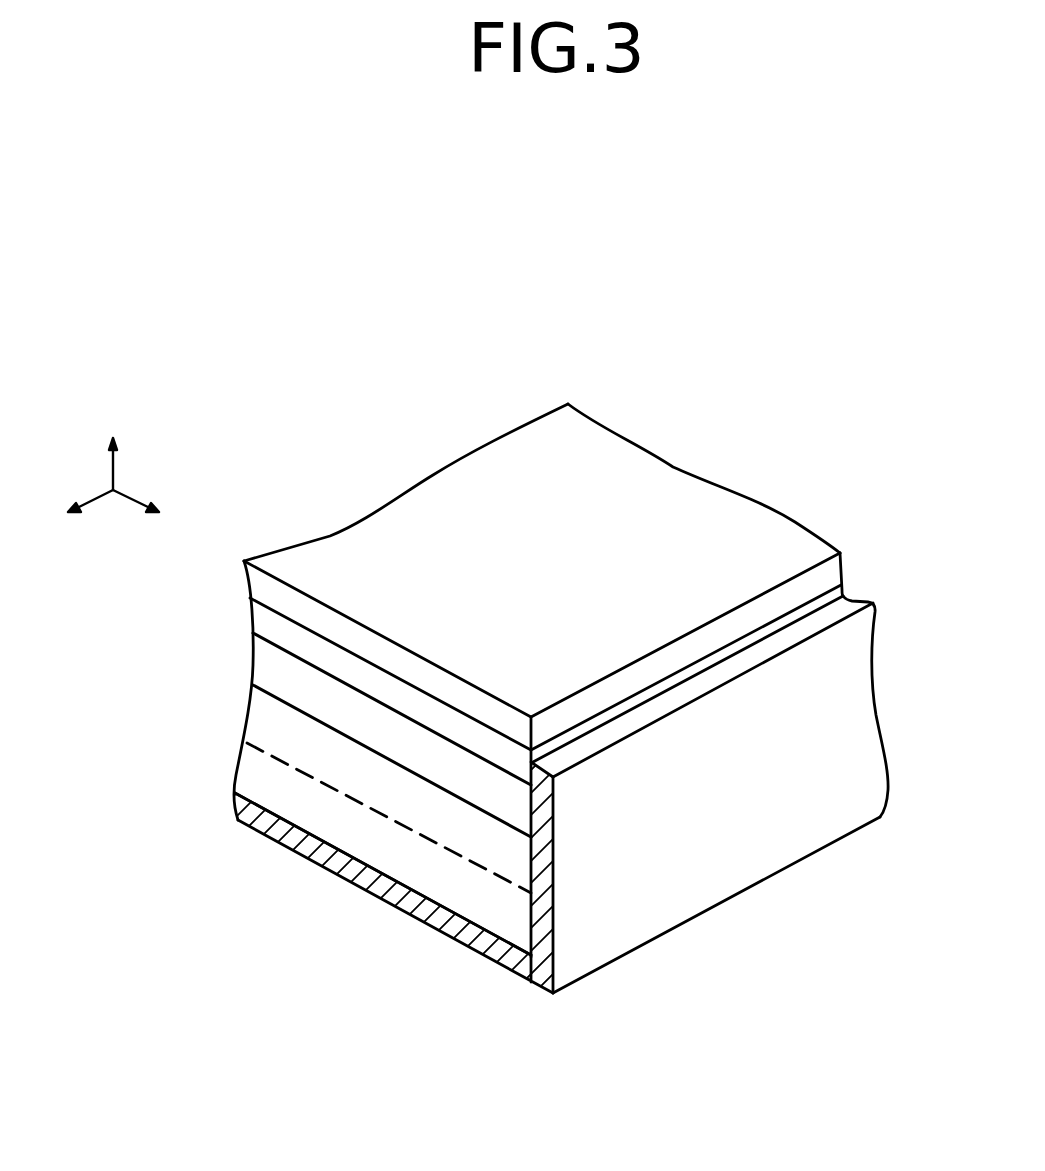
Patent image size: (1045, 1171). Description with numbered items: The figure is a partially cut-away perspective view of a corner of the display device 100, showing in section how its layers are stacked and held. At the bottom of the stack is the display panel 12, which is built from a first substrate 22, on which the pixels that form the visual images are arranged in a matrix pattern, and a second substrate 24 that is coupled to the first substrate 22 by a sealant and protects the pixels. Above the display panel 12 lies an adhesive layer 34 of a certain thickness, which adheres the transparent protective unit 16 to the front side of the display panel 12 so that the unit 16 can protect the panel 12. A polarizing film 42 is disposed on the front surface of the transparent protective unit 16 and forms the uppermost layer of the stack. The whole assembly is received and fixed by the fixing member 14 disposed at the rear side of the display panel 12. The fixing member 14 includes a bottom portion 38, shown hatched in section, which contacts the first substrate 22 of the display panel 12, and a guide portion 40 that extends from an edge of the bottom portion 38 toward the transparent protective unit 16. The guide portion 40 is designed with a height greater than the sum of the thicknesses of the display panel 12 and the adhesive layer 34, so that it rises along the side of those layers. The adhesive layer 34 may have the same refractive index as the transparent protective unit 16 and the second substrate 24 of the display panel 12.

The display device 100 is at (549, 307).
The display panel 12 is at (314, 815).
The fixing member 14 is at (721, 794).
The transparent protective unit 16 is at (250, 623).
The first substrate 22 is at (346, 842).
The second substrate 24 is at (256, 717).
The adhesive layer 34 is at (253, 671).
The bottom portion 38 is at (387, 888).
The guide portion 40 is at (673, 900).
The polarizing film 42 is at (667, 490).